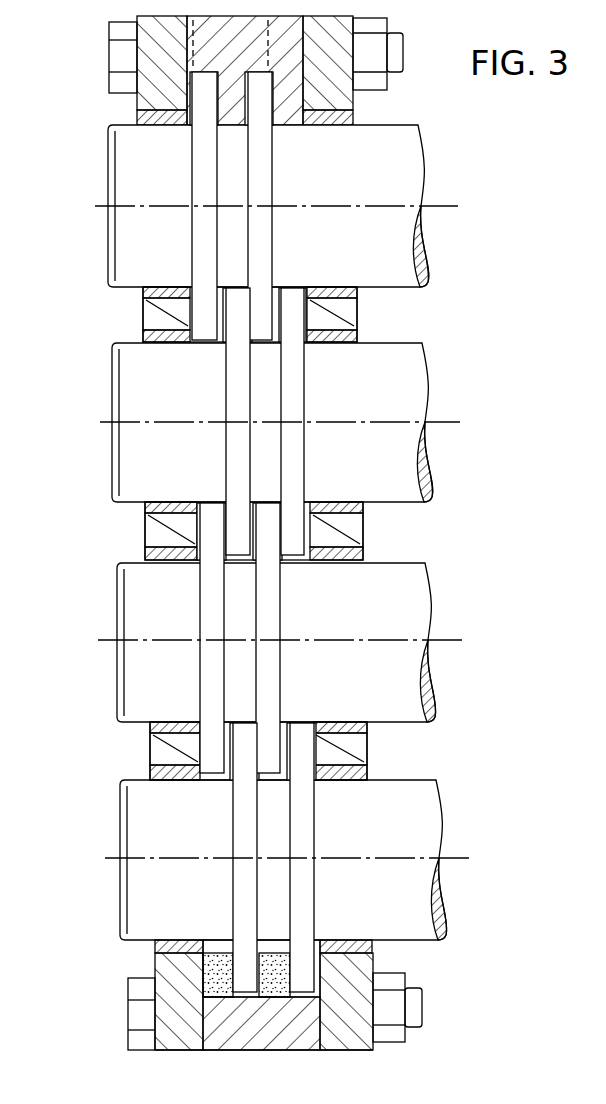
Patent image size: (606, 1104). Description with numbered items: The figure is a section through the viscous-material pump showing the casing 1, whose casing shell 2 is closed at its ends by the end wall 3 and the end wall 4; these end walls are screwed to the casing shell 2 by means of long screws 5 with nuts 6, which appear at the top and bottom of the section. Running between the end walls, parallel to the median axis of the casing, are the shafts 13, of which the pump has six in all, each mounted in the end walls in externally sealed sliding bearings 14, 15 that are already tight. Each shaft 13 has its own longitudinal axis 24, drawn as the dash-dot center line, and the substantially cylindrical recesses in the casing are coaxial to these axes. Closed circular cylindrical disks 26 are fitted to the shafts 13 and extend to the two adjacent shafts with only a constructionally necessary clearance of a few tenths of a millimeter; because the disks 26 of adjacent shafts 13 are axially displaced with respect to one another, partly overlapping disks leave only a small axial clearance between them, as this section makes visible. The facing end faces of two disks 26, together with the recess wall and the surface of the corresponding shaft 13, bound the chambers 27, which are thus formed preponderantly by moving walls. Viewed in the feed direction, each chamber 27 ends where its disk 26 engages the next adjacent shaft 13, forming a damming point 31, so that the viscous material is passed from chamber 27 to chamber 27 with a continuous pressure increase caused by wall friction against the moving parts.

The casing 1 is at (298, 1052).
The casing shell 2 is at (263, 1030).
The end wall 3 is at (178, 1030).
The end wall 4 is at (348, 1017).
The long screw 5 is at (143, 1010).
The nut 6 is at (393, 978).
The shaft 13 is at (405, 153).
The bearing 14 is at (143, 292).
The bearing 15 is at (360, 505).
The longitudinal axis 24 is at (98, 207).
The disk 26 is at (263, 250).
The chamber 27 is at (283, 985).
The damming point 31 is at (208, 500).